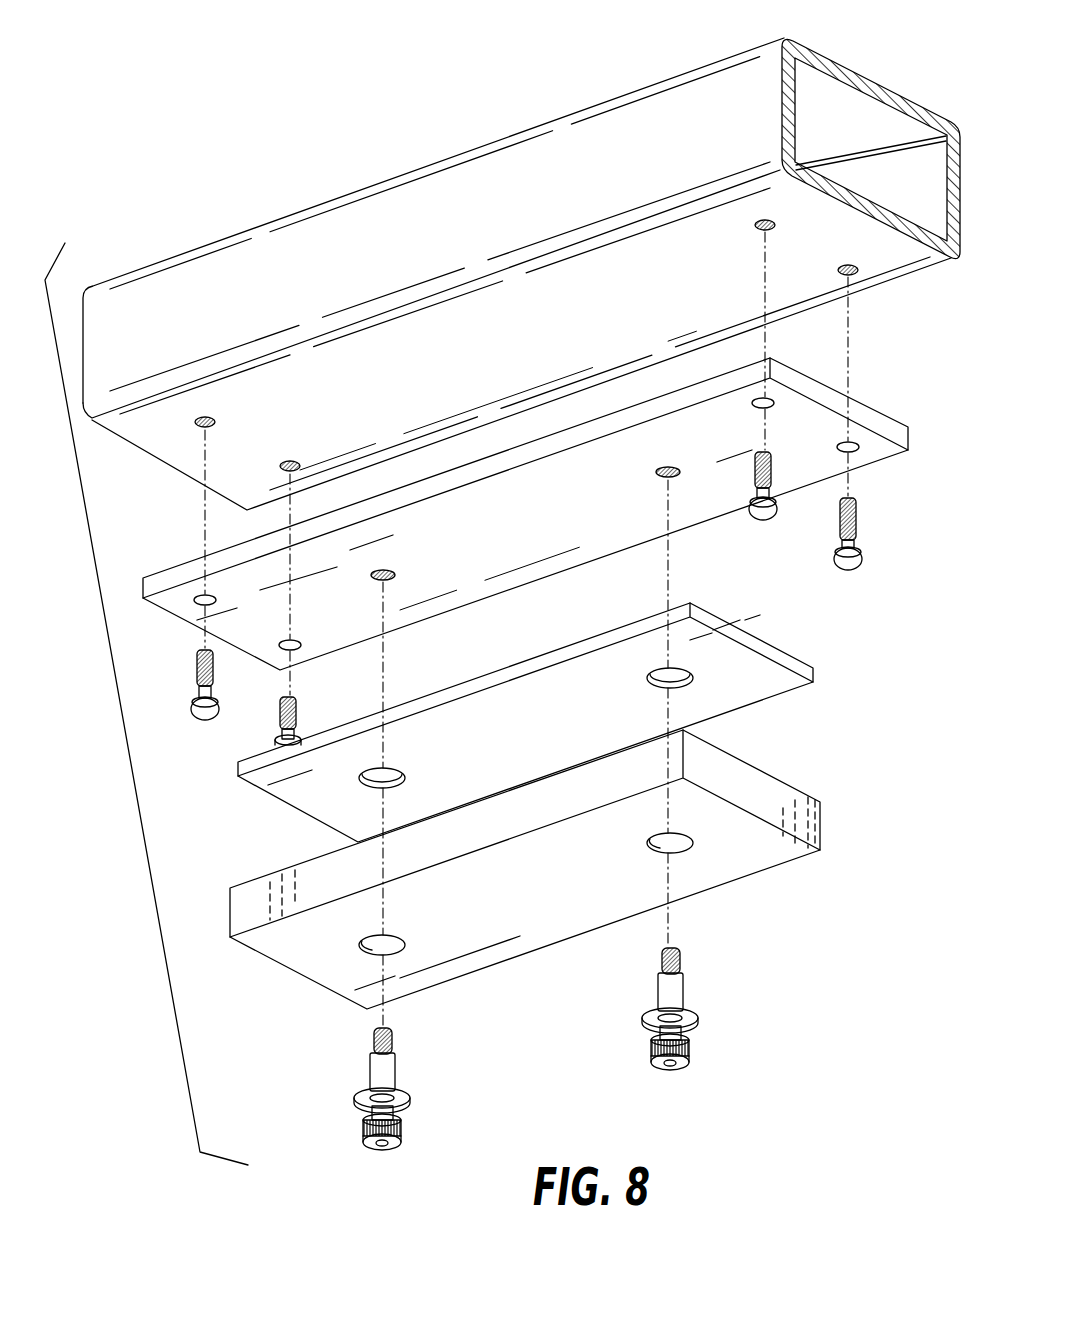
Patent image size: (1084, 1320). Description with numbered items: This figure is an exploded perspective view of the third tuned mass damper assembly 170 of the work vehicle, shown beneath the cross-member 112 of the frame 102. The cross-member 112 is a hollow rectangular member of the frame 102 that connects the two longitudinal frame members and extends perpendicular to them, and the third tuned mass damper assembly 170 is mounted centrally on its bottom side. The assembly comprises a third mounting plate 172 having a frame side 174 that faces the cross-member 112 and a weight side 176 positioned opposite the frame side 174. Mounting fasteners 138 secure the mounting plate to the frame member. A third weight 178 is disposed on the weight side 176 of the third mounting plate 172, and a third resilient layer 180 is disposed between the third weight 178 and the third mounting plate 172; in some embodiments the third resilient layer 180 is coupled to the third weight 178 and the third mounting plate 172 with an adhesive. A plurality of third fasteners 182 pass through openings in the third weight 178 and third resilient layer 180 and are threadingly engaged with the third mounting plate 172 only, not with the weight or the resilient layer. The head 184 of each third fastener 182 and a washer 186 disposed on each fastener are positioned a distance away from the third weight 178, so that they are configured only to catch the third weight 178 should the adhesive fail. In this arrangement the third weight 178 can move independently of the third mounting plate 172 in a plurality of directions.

The frame 102 is at (520, 167).
The cross-member 112 is at (521, 274).
The mounting fasteners 138 is at (835, 548).
The third tuned mass damper assembly 170 is at (133, 788).
The third mounting plate 172 is at (806, 420).
The frame side 174 is at (528, 436).
The weight side 176 is at (488, 522).
The third weight 178 is at (758, 853).
The third resilient layer 180 is at (743, 687).
The third fasteners 182 is at (673, 992).
The head 184 is at (678, 1070).
The washer 186 is at (695, 1022).